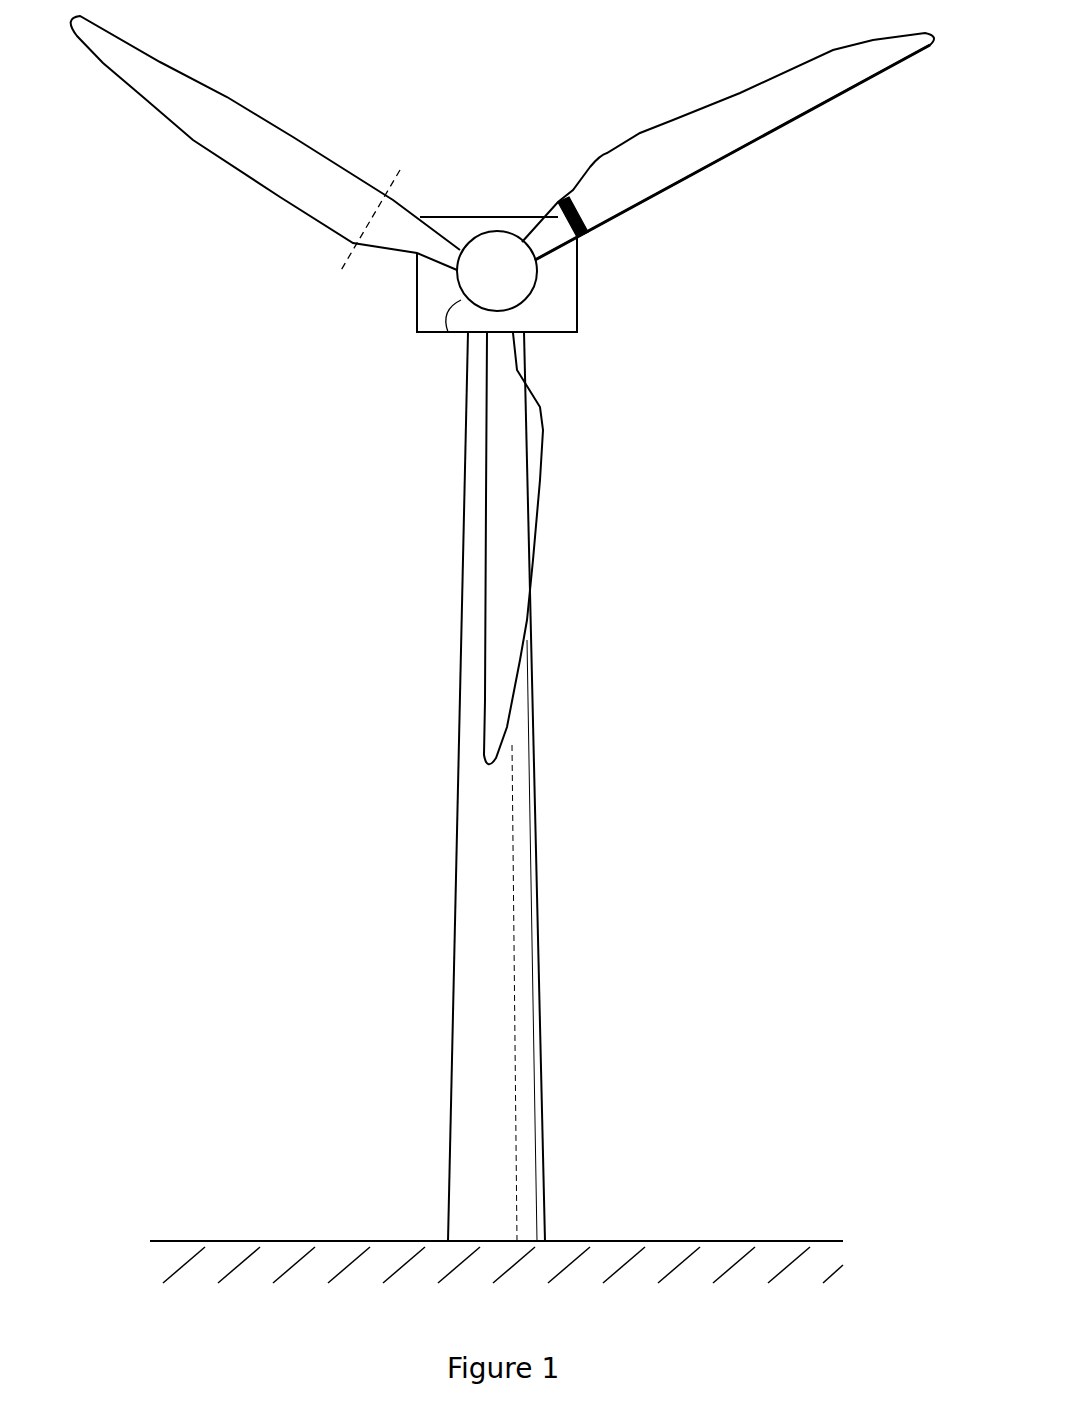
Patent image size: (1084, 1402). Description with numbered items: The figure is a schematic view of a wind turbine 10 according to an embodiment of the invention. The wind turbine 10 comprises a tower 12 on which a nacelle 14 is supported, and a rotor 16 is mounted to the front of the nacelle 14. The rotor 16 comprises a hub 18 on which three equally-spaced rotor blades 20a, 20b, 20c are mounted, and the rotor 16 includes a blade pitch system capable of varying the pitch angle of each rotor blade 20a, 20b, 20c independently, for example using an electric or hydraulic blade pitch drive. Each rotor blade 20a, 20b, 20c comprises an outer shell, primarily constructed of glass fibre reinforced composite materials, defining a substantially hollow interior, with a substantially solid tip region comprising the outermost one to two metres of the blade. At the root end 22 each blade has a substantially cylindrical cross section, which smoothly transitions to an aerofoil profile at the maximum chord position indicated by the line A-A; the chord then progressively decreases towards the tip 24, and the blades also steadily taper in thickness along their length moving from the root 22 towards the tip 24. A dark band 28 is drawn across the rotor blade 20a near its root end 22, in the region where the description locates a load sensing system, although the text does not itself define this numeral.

The wind turbine 10 is at (123, 852).
The tower 12 is at (542, 1076).
The nacelle 14 is at (578, 318).
The rotor 16 is at (804, 416).
The hub 18 is at (455, 312).
The rotor blade 20a is at (740, 153).
The rotor blade 20b is at (545, 442).
The rotor blade 20c is at (200, 144).
The root end 22 is at (540, 188).
The tip 24 is at (154, 29).
The blade section band 28 is at (585, 236).